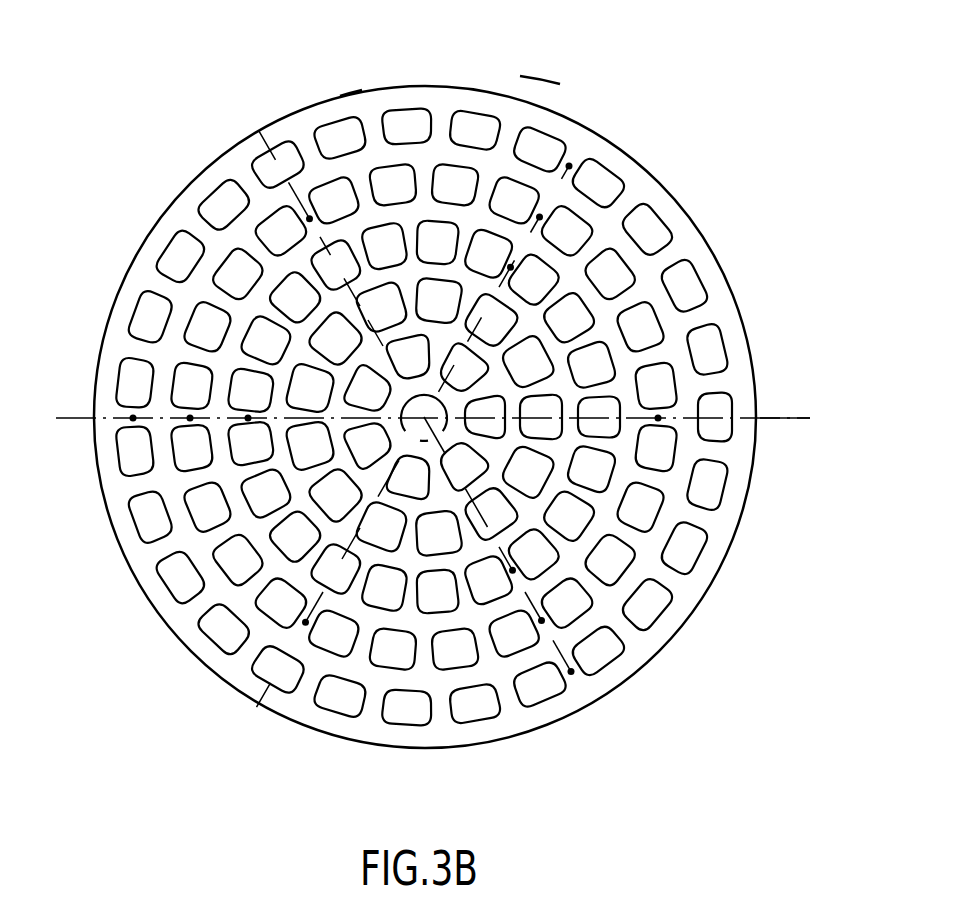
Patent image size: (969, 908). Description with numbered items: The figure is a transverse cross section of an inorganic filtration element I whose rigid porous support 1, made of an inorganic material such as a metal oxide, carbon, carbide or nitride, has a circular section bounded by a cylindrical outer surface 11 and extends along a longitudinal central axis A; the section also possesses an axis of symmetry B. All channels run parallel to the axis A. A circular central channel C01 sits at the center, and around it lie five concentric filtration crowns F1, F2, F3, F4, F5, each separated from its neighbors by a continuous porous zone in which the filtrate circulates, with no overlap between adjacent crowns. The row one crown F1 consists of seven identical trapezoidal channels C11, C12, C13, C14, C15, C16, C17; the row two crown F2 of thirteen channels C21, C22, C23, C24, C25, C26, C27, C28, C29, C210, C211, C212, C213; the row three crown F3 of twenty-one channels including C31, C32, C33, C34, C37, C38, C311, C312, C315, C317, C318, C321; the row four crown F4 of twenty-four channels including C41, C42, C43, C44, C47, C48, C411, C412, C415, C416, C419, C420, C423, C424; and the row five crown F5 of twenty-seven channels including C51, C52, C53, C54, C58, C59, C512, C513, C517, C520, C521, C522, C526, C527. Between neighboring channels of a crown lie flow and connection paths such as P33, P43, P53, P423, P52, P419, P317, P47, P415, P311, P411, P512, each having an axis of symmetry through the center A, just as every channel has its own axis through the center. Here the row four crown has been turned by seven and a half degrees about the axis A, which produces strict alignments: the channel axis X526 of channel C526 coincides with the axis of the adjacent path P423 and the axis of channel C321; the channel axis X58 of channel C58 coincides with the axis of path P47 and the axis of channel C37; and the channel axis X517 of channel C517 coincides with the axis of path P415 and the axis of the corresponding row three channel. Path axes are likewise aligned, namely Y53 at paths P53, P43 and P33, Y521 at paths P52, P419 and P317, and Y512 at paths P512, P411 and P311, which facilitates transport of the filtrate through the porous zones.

The rigid porous support 1 is at (307, 130).
The cylindrical outer surface 11 is at (351, 95).
The inorganic filtration element I is at (541, 72).
The longitudinal central axis A is at (424, 419).
The axis of symmetry B is at (801, 413).
The central channel C01 is at (424, 418).
The channel C11 is at (410, 357).
The channel C12 is at (462, 369).
The channel C13 is at (485, 417).
The channel C14 is at (462, 465).
The channel C15 is at (410, 476).
The channel C16 is at (369, 443).
The channel C17 is at (369, 390).
The channel C21 is at (382, 307).
The channel C22 is at (437, 300).
The channel C23 is at (490, 321).
The channel C24 is at (528, 362).
The channel C25 is at (541, 417).
The channel C26 is at (528, 471).
The channel C27 is at (490, 513).
The channel C28 is at (437, 533).
The channel C29 is at (382, 526).
The channel C210 is at (336, 495).
The channel C211 is at (310, 445).
The channel C212 is at (311, 389).
The channel C213 is at (336, 340).
The channel C31 is at (384, 246).
The channel C32 is at (437, 242).
The channel C33 is at (488, 254).
The channel C34 is at (533, 280).
The channel C37 is at (599, 416).
The channel C38 is at (591, 469).
The channel C311 is at (533, 555).
The channel C312 is at (488, 580).
The channel C315 is at (337, 569).
The channel C317 is at (251, 443).
The channel C318 is at (251, 390).
The channel C321 is at (337, 266).
The channel C41 is at (393, 185).
The channel C42 is at (454, 185).
The channel C43 is at (514, 201).
The channel C44 is at (566, 232).
The channel C47 is at (656, 386).
The channel C48 is at (656, 447).
The channel C411 is at (567, 603).
The channel C412 is at (513, 633).
The channel C415 is at (334, 633).
The channel C416 is at (282, 603).
The channel C419 is at (192, 448).
The channel C420 is at (192, 386).
The channel C423 is at (282, 231).
The channel C424 is at (334, 201).
The channel C51 is at (407, 126).
The channel C52 is at (475, 130).
The channel C53 is at (539, 150).
The channel C54 is at (597, 184).
The channel C58 is at (715, 417).
The channel C59 is at (707, 484).
The channel C512 is at (597, 651).
The channel C513 is at (539, 684).
The channel C517 is at (278, 669).
The channel C520 is at (151, 517).
The channel C521 is at (135, 450).
The channel C522 is at (135, 382).
The channel C526 is at (278, 165).
The channel C527 is at (340, 139).
The flow and connection path P33 is at (510, 267).
The flow and connection path P43 is at (540, 216).
The flow and connection path P53 is at (570, 167).
The flow and connection path P423 is at (310, 219).
The flow and connection path P52 is at (133, 418).
The flow and connection path P419 is at (213, 483).
The flow and connection path P317 is at (248, 418).
The flow and connection path P47 is at (660, 421).
The flow and connection path P415 is at (306, 622).
The flow and connection path P311 is at (515, 571).
The flow and connection path P411 is at (542, 621).
The flow and connection path P512 is at (571, 672).
The row 1 filtration crown F1 is at (350, 381).
The row 2 filtration crown F2 is at (522, 308).
The row 3 filtration crown F3 is at (589, 300).
The row 4 filtration crown F4 is at (657, 301).
The row 5 filtration crown F5 is at (722, 321).
The channel axis of symmetry X526 is at (247, 103).
The path axis of symmetry Y53 is at (593, 128).
The channel axis of symmetry X58 is at (807, 420).
The path axis of symmetry Y521 is at (62, 416).
The channel axis of symmetry X517 is at (238, 740).
The path axis of symmetry Y512 is at (606, 731).